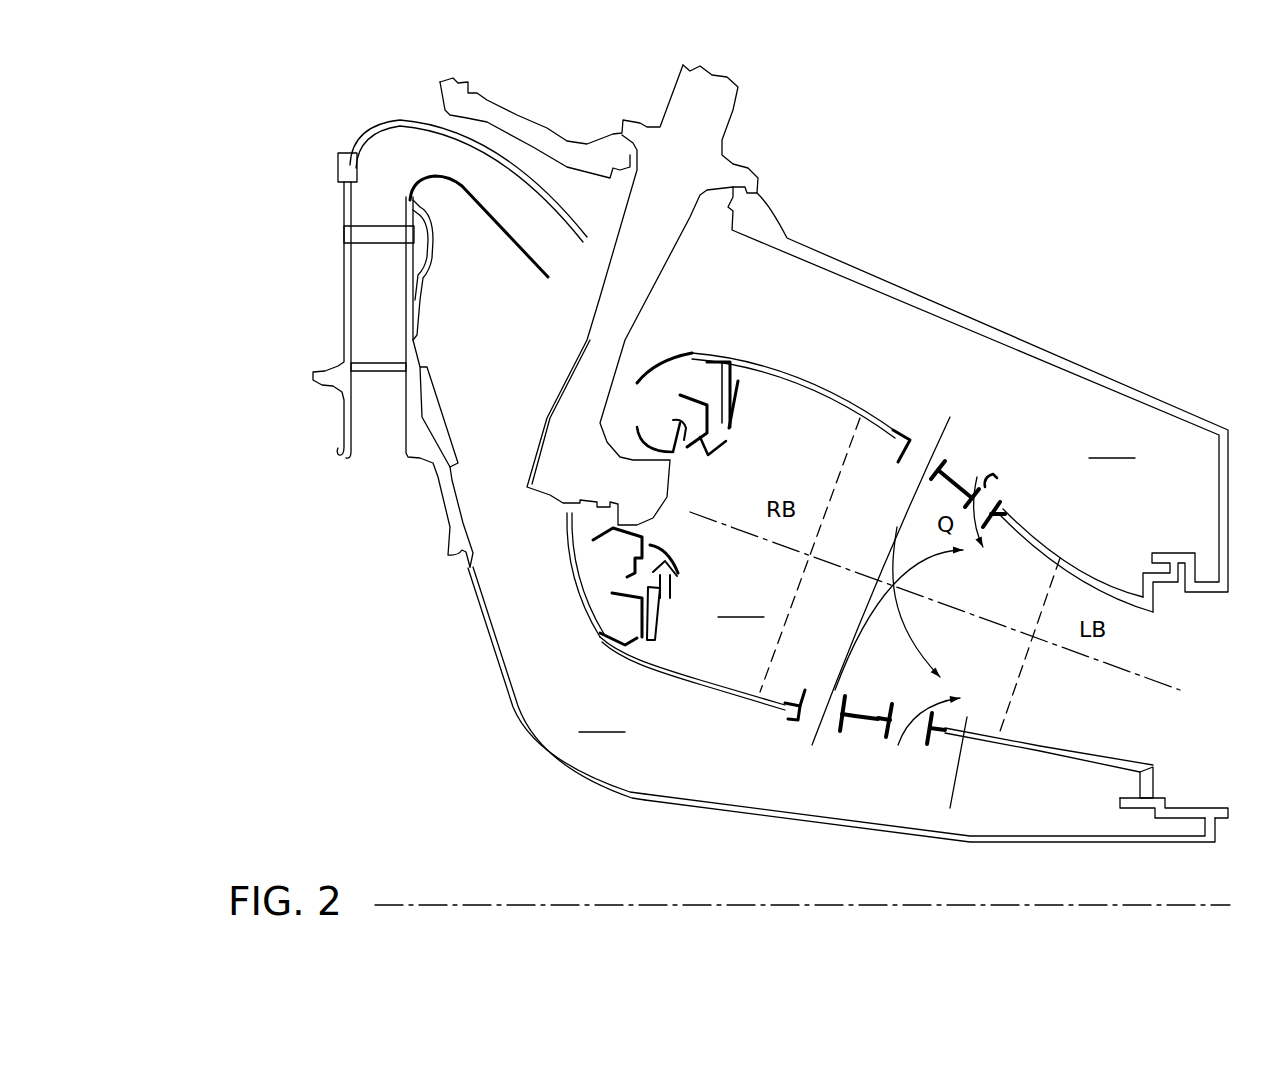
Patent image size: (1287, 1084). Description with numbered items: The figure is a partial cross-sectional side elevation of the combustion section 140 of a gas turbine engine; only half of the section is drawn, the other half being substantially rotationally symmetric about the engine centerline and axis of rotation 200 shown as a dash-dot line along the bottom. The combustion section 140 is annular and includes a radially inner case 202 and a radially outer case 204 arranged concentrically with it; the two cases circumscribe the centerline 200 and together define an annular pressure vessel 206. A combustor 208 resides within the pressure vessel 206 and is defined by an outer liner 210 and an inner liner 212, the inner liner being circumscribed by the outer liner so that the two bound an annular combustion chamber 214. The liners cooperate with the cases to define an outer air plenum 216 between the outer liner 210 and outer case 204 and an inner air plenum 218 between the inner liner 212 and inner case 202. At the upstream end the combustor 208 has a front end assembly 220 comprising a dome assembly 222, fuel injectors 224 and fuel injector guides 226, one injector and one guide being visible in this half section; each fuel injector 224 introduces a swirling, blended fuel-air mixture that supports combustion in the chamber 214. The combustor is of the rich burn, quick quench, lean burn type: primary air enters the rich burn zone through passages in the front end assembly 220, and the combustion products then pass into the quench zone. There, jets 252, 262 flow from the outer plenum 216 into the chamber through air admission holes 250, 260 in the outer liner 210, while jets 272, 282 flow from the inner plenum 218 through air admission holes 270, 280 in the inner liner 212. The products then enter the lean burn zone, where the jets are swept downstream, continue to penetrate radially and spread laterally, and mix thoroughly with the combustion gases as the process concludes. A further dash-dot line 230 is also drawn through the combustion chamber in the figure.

The combustion section 140 is at (258, 190).
The centerline and axis of rotation 200 is at (533, 903).
The radially inner case 202 is at (668, 802).
The radially outer case 204 is at (886, 287).
The annular pressure vessel 206 is at (542, 737).
The combustor 208 is at (697, 698).
The outer liner 210 is at (765, 358).
The inner liner 212 is at (773, 708).
The annular combustion chamber 214 is at (741, 604).
The outer air plenum 216 is at (1112, 445).
The inner air plenum 218 is at (602, 719).
The front end assembly 220 is at (553, 382).
The dome assembly 222 is at (565, 560).
The fuel injector 224 is at (548, 420).
The fuel injector guide 226 is at (655, 447).
The combustor centerline 230 is at (1128, 671).
The air admission hole 250 is at (932, 468).
The jet 252 is at (892, 543).
The air admission hole 260 is at (1012, 512).
The jet 262 is at (997, 481).
The air admission hole 270 is at (838, 712).
The jet 272 is at (847, 650).
The air admission hole 280 is at (920, 731).
The jet 282 is at (920, 707).